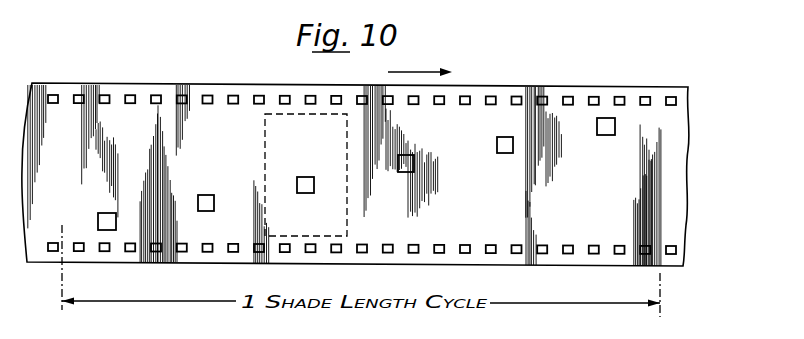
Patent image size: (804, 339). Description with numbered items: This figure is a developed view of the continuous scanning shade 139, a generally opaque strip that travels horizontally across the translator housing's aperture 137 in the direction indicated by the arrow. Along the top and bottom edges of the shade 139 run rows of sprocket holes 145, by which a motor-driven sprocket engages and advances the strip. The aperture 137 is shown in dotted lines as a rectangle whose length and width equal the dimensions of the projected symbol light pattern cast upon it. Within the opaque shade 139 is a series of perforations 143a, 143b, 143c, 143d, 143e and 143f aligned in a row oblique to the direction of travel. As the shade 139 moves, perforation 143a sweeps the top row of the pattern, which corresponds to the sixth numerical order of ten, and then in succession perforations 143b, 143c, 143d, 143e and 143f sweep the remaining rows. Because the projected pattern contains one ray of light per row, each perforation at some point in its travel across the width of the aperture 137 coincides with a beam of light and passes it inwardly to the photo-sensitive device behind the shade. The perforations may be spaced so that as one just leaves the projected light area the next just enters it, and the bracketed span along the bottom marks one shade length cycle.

The shade 139 is at (147, 84).
The aperture 137 is at (274, 113).
The sprocket holes 145 is at (542, 95).
The perforation 143a is at (605, 118).
The perforation 143b is at (501, 154).
The perforation 143c is at (412, 158).
The perforation 143d is at (306, 193).
The perforation 143e is at (207, 195).
The perforation 143f is at (98, 215).